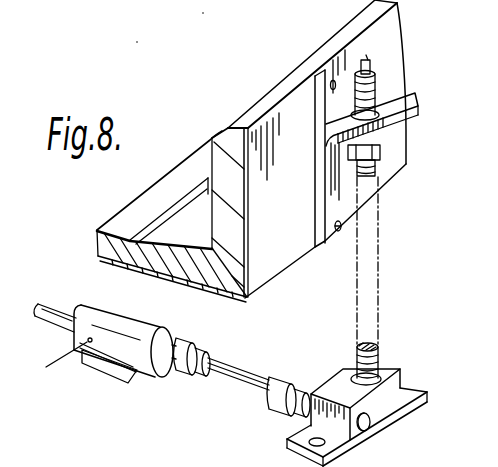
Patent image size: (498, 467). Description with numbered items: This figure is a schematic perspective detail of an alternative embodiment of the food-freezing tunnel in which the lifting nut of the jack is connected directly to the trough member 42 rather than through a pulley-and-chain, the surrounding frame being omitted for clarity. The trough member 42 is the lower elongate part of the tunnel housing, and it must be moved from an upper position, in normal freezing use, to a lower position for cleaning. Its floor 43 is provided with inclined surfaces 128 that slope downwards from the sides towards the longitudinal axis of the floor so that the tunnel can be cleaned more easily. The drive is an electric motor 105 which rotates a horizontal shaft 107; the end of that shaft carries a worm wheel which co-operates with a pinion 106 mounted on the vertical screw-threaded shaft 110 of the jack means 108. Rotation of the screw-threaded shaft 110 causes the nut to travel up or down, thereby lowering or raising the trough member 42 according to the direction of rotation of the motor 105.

The trough member 42 is at (402, 55).
The floor 43 is at (136, 230).
The inclined surfaces 128 is at (188, 236).
The jack means 108 is at (384, 169).
The screw-threaded shaft 110 is at (380, 350).
The pinion 106 is at (401, 388).
The electric motor 105 is at (113, 350).
The horizontal shaft 107 is at (242, 389).